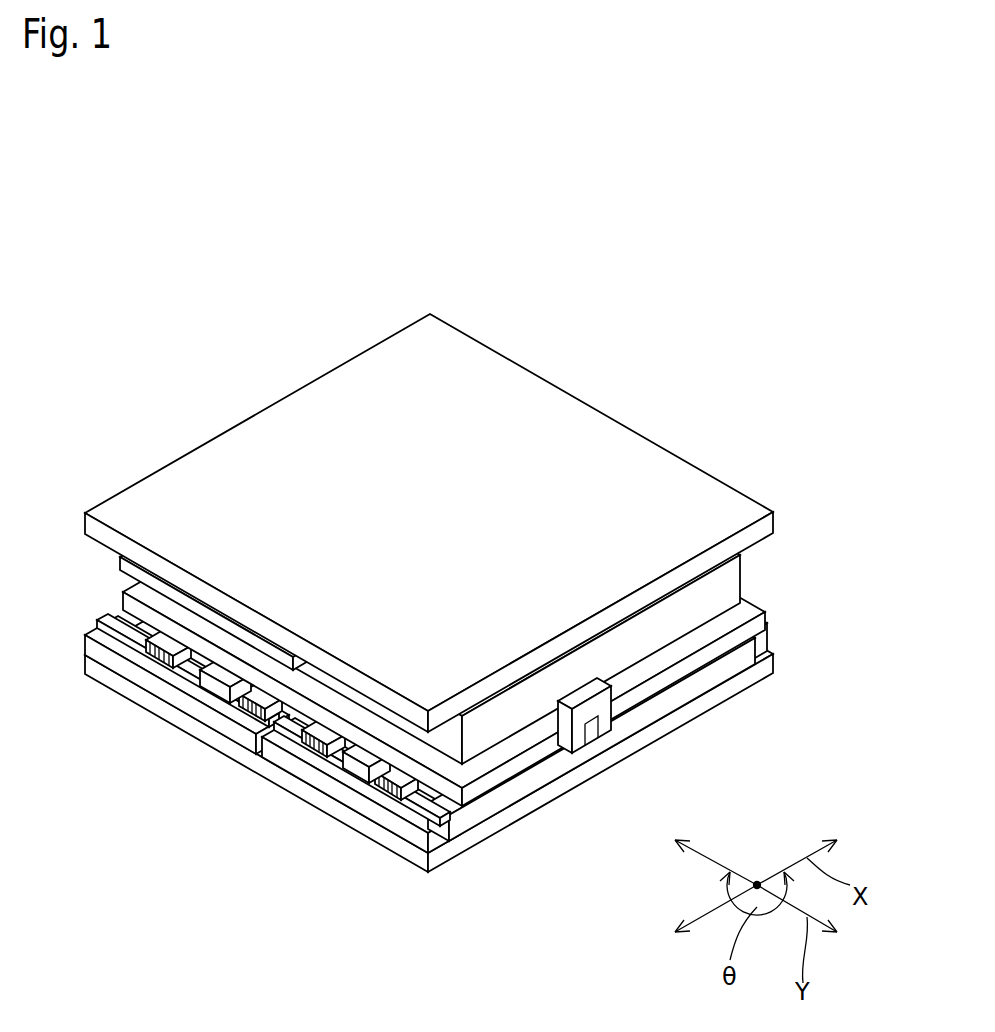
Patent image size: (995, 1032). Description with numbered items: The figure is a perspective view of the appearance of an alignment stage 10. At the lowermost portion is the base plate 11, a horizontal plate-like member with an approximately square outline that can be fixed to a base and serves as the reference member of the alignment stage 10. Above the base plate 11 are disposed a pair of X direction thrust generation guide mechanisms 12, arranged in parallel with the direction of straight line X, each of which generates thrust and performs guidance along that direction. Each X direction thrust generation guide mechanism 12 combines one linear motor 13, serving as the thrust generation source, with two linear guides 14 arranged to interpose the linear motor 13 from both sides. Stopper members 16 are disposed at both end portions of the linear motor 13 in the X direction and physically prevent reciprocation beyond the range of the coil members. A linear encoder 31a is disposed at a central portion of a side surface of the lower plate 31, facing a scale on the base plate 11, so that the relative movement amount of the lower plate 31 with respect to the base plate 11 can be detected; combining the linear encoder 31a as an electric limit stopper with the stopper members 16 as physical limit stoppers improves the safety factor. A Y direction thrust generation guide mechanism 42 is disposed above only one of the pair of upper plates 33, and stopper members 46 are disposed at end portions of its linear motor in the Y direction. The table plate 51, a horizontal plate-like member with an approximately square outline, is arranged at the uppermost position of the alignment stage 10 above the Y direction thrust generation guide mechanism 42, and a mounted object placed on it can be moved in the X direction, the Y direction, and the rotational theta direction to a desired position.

The alignment stage 10 is at (725, 358).
The base plate 11 is at (600, 770).
The X direction thrust generation guide mechanism 12 is at (172, 658).
The linear motor 13 is at (218, 680).
The linear guide 14 is at (125, 620).
The stopper member 16 is at (175, 695).
The lower plate 31 is at (137, 585).
The linear encoder 31a is at (614, 727).
The upper plate 33 is at (118, 560).
The Y direction thrust generation guide mechanism 42 is at (621, 656).
The stopper member 46 is at (735, 665).
The table plate 51 is at (290, 440).